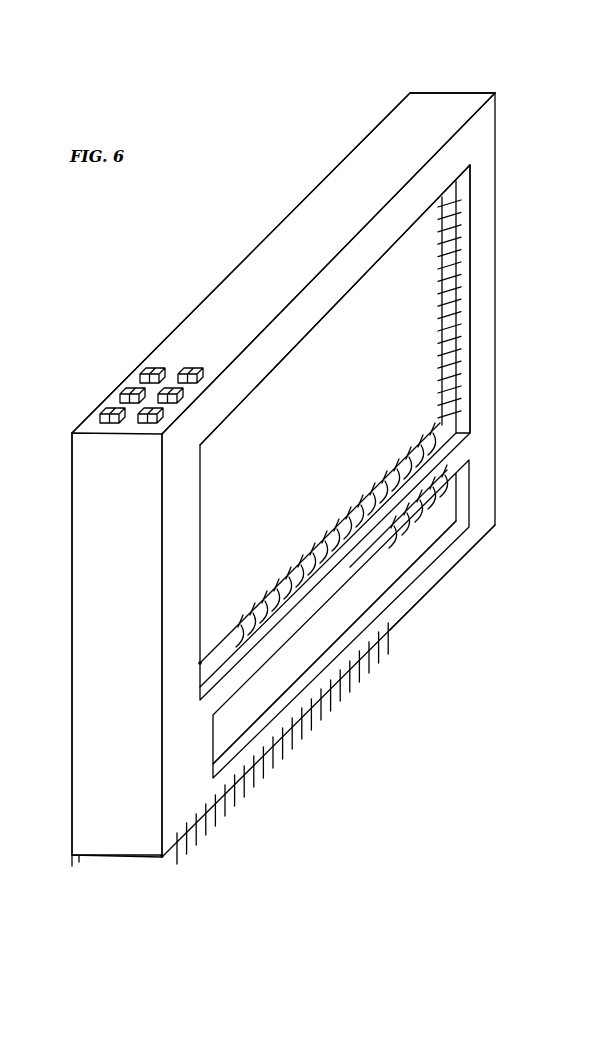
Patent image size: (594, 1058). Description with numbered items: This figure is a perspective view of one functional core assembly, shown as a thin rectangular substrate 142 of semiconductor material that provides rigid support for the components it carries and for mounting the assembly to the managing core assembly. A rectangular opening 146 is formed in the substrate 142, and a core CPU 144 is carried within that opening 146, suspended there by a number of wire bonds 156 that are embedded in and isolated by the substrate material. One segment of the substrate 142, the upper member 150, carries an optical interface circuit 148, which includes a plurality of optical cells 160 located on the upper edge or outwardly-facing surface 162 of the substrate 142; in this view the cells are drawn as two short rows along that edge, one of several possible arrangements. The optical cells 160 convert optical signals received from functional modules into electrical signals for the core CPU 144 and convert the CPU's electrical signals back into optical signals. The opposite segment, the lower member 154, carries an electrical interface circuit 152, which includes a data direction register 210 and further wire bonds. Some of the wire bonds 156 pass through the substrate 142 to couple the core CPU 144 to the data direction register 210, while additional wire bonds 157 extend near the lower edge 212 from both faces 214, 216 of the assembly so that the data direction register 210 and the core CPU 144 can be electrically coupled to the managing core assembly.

The substrate 142 is at (498, 180).
The core CPU 144 is at (399, 322).
The opening 146 is at (467, 267).
The optical interface circuit 148 is at (249, 355).
The upper member 150 is at (367, 238).
The electrical interface circuit 152 is at (484, 514).
The lower member 154 is at (475, 465).
The wire bonds 156 is at (466, 337).
The wire bonds 157 is at (85, 867).
The optical cells 160 is at (107, 399).
The upper edge 162 is at (438, 132).
The data direction register 210 is at (401, 573).
The lower edge 212 is at (127, 854).
The face 214 is at (175, 520).
The face 216 is at (72, 492).